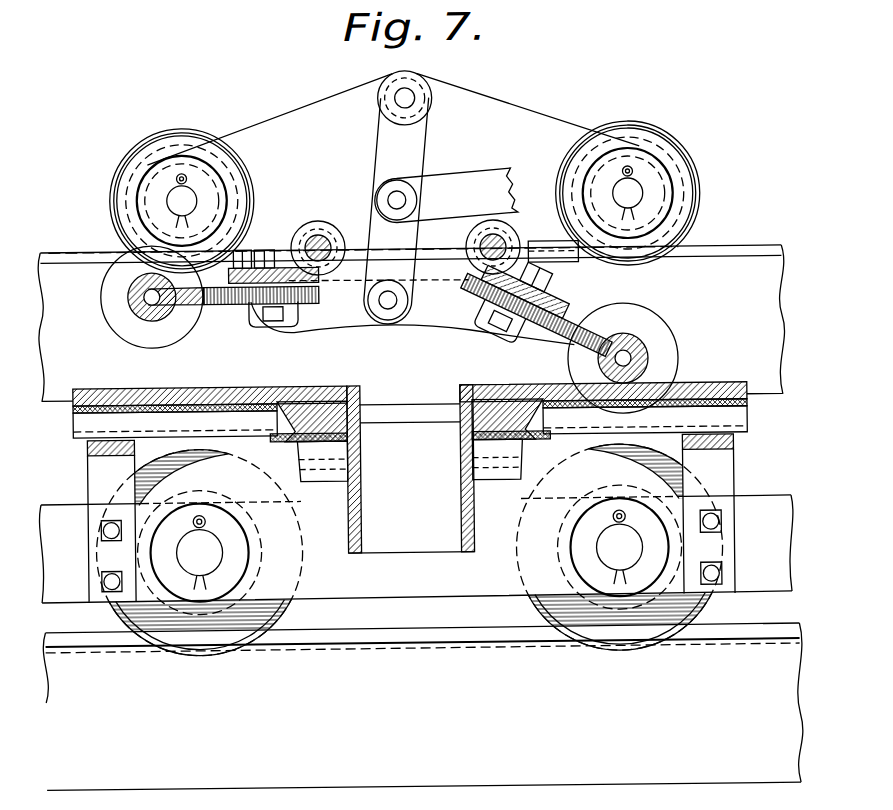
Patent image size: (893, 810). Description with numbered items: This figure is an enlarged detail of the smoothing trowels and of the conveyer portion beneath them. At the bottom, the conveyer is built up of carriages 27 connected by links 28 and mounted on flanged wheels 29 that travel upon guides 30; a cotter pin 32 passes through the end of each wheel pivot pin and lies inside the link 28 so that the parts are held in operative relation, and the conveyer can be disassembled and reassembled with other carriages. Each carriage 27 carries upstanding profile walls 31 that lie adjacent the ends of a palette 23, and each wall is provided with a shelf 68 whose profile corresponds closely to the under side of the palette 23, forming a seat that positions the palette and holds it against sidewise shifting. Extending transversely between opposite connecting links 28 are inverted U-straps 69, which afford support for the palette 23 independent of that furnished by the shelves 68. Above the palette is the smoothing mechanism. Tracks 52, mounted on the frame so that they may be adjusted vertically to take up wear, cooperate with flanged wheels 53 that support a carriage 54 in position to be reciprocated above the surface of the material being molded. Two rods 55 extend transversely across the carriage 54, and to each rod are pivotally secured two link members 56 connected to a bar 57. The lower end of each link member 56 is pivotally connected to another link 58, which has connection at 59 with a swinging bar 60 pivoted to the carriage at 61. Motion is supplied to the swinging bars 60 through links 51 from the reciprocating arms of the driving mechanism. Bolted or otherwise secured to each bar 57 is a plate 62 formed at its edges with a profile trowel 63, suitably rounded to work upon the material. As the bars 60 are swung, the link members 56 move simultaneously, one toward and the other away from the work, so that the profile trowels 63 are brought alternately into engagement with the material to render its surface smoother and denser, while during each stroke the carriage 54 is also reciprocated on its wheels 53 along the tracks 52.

The palette 23 is at (92, 412).
The carriage 27 is at (411, 469).
The link 28 is at (416, 549).
The flanged wheel 29 is at (219, 651).
The guide 30 is at (423, 706).
The profile wall 31 is at (360, 463).
The cotter pin 32 is at (201, 525).
The link 51 is at (470, 179).
The track 52 is at (730, 247).
The flanged wheel 53 is at (700, 178).
The carriage 54 is at (545, 120).
The rod 55 is at (325, 237).
The link member 56 is at (317, 221).
The bar 57 is at (270, 323).
The link 58 is at (352, 322).
The connection 59 is at (389, 310).
The swinging bar 60 is at (388, 151).
The pivot 61 is at (401, 100).
The plate 62 is at (233, 303).
The profile trowel 63 is at (149, 334).
The shelf 68 is at (327, 441).
The inverted U-strap 69 is at (108, 452).